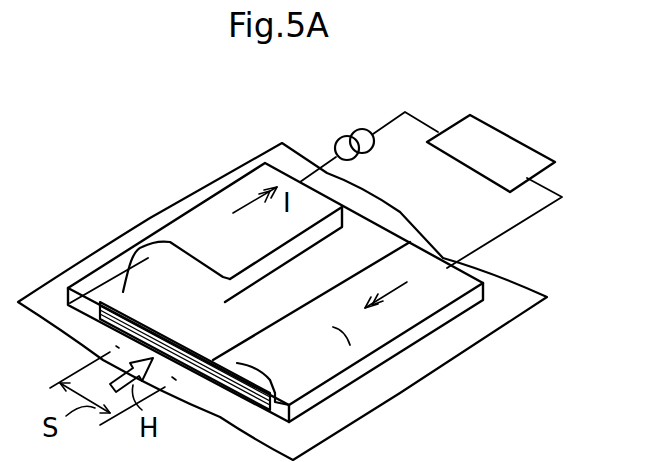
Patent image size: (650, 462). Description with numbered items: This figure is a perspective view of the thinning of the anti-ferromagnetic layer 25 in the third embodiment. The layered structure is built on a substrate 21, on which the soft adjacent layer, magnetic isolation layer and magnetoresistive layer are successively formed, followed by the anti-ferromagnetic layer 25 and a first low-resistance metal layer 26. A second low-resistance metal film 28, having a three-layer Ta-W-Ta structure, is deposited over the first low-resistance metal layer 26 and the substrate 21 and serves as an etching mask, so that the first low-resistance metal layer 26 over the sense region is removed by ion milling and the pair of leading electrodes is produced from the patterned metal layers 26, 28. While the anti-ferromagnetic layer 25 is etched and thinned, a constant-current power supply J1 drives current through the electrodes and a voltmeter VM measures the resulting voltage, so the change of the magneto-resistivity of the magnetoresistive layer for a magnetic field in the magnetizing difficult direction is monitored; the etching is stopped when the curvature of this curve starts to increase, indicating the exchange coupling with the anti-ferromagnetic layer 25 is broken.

The substrate 21 is at (414, 368).
The anti-ferromagnetic layer 25 is at (253, 313).
The first low-resistance metal layer 26 is at (123, 297).
The second low-resistance metal film 28 is at (113, 268).
The constant-current power supply J1 is at (369, 139).
The voltmeter VM is at (500, 130).